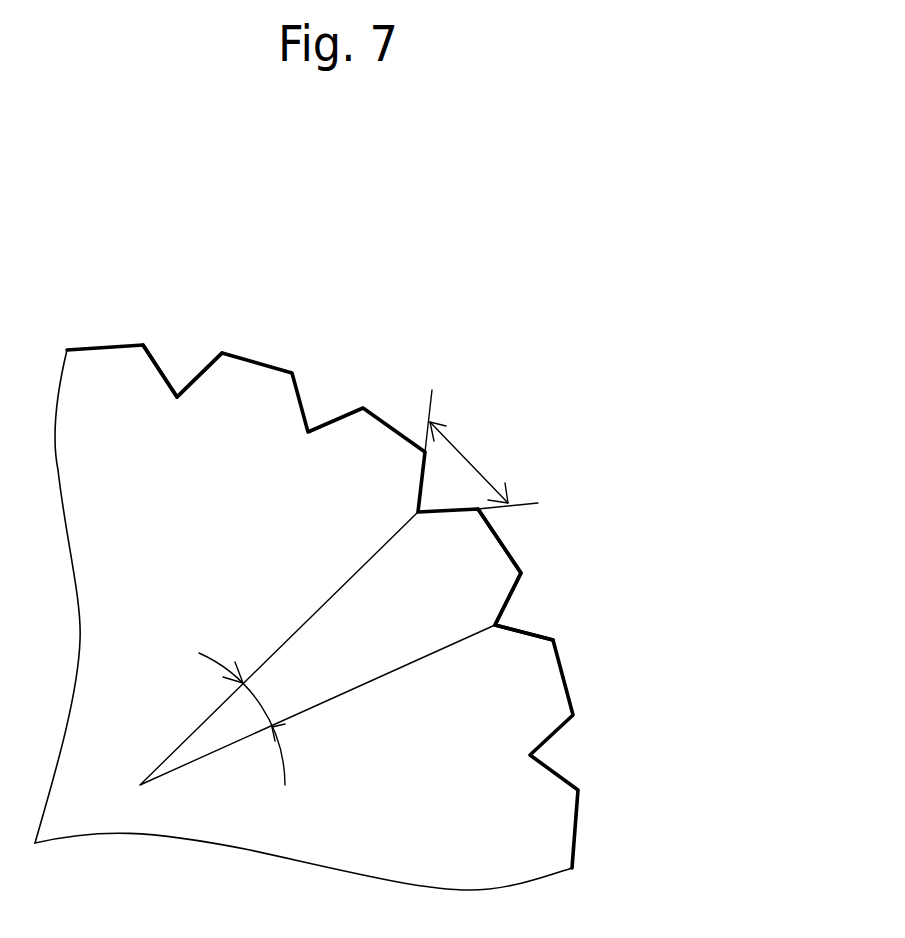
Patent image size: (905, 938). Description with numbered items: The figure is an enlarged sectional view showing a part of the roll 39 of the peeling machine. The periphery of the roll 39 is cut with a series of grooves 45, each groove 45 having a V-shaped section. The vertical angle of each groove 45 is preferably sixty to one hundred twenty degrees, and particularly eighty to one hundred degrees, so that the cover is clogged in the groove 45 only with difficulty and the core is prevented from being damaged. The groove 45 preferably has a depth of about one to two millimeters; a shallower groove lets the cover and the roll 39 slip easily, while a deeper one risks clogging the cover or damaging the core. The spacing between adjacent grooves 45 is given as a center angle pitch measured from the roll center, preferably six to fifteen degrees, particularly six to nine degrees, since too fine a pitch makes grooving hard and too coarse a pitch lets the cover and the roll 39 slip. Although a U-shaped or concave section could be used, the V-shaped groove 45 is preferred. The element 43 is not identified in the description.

The roll 39 is at (612, 248).
The ratchet tooth 43 is at (508, 600).
The groove 45 is at (162, 367).